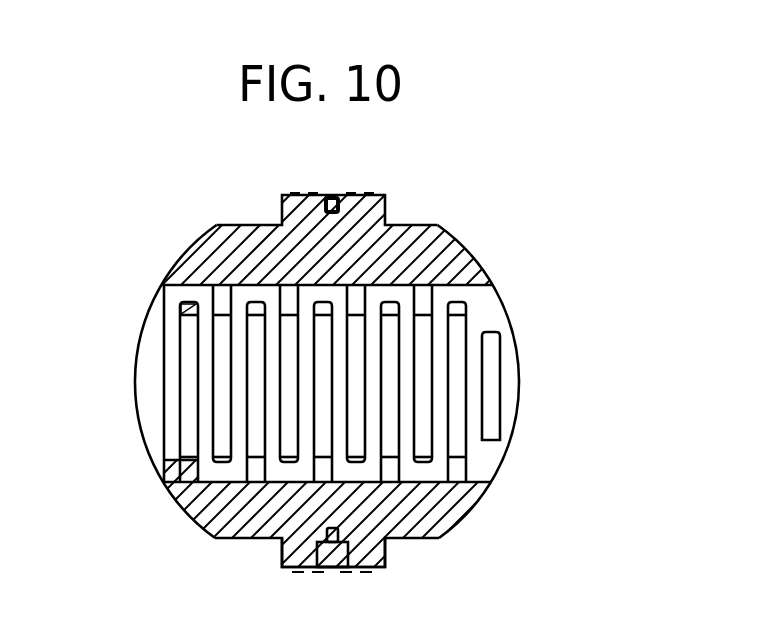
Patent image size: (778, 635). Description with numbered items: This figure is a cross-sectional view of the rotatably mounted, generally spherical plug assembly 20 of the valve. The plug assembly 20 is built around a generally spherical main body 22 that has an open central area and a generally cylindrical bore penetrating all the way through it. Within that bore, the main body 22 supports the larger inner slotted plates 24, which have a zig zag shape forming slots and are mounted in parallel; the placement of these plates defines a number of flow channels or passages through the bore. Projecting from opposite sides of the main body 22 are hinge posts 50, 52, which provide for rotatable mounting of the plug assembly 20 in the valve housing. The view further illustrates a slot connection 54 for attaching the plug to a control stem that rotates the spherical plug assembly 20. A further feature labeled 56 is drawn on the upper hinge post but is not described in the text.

The spherical plug assembly 20 is at (514, 266).
The main body 22 is at (457, 508).
The inner slotted plates 24 is at (510, 370).
The hinge post 50 is at (385, 563).
The hinge post 52 is at (384, 196).
The slot connection 54 is at (318, 565).
The upper port 56 is at (333, 195).